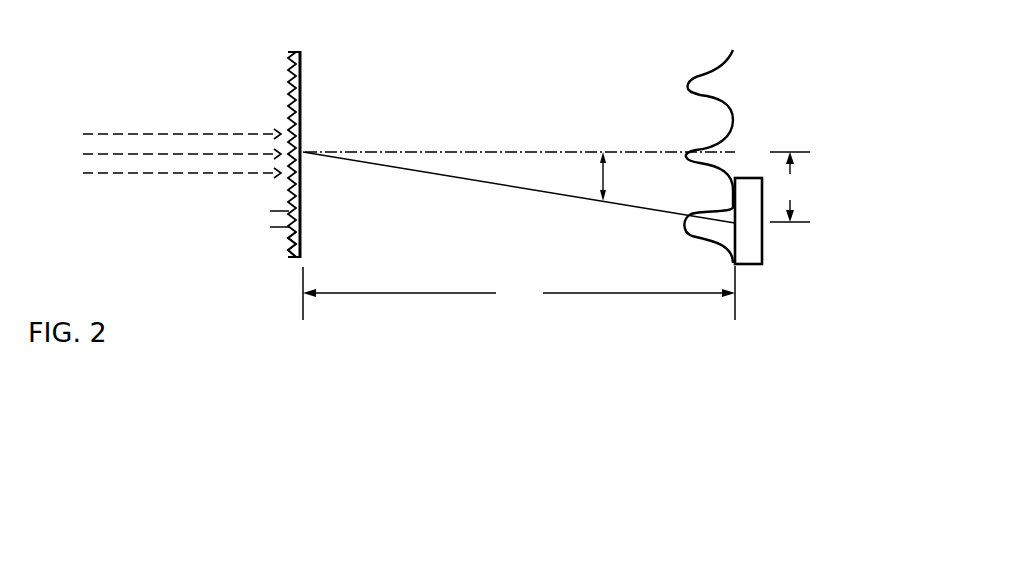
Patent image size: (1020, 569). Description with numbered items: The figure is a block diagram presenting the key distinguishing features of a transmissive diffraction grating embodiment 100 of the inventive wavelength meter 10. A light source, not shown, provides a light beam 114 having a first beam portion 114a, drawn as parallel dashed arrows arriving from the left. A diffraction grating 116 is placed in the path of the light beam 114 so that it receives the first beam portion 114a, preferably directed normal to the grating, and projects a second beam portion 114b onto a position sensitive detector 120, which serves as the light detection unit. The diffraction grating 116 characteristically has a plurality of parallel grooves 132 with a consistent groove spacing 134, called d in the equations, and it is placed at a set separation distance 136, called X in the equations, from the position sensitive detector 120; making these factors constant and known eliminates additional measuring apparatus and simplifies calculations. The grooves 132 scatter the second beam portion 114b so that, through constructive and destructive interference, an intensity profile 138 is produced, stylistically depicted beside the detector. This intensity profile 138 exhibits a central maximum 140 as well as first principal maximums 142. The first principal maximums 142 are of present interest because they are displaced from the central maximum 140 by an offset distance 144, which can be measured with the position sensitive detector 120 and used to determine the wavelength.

The wavelength meter 10 is at (708, 388).
The transmissive diffraction grating embodiment 100 is at (320, 370).
The light beam 114 is at (139, 92).
The first beam portion 114a is at (182, 117).
The second beam portion 114b is at (492, 92).
The diffraction grating 116 is at (298, 51).
The position sensitive detector 120 is at (763, 245).
The grooves 132 is at (273, 248).
The groove spacing 134 is at (256, 220).
The separation distance 136 is at (519, 293).
The intensity profile 138 is at (716, 42).
The central maximum 140 is at (694, 163).
The first principal maximums 142 is at (694, 97).
The offset distance 144 is at (791, 187).